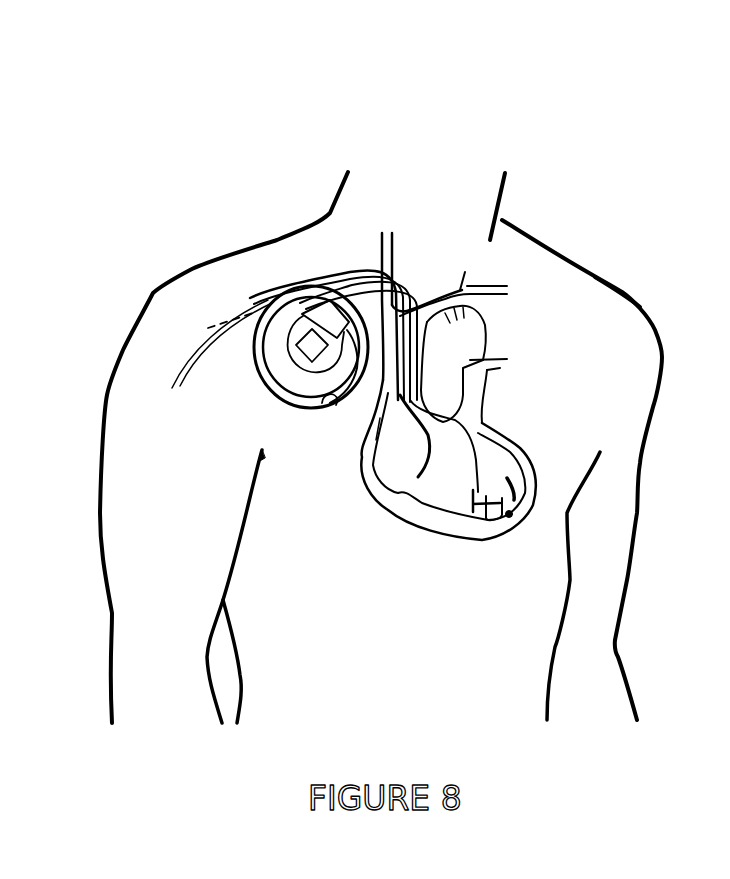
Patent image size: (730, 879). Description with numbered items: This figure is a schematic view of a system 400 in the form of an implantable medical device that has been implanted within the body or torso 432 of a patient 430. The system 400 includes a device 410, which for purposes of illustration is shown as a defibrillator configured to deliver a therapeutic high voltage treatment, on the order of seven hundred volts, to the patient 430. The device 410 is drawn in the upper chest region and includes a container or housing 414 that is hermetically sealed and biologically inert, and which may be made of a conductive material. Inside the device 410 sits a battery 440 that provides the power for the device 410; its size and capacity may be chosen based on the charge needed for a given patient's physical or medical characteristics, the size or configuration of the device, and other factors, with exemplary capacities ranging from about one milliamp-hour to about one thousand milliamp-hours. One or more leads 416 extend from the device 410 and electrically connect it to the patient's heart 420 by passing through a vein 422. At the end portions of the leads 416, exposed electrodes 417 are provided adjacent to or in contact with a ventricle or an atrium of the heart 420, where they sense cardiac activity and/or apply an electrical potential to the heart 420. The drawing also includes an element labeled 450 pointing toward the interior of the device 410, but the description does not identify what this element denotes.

The system 400 is at (341, 231).
The device 410 is at (295, 367).
The housing 414 is at (302, 375).
The leads 416 is at (328, 405).
The electrodes 417 is at (510, 473).
The heart 420 is at (479, 538).
The vein 422 is at (283, 286).
The patient 430 is at (441, 144).
The body or torso 432 is at (627, 288).
The battery 440 is at (325, 307).
The sensor 450 is at (290, 366).